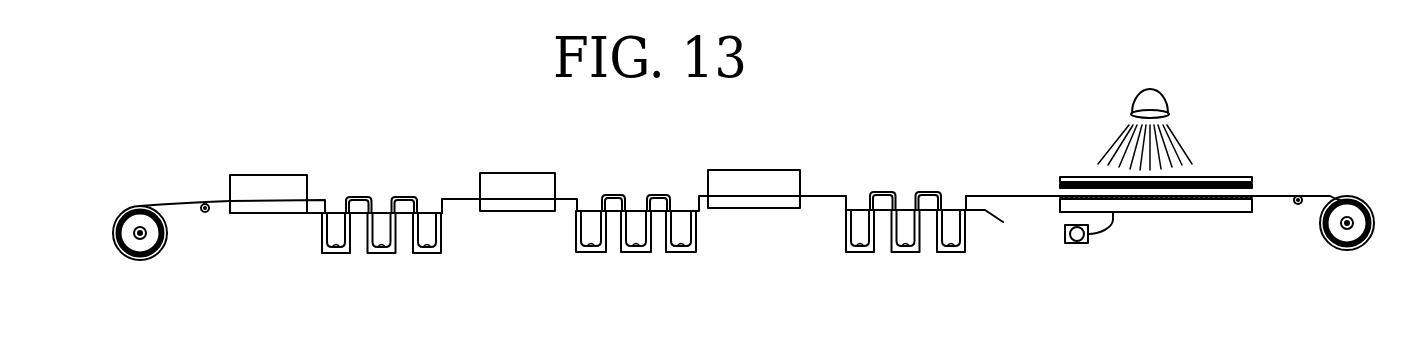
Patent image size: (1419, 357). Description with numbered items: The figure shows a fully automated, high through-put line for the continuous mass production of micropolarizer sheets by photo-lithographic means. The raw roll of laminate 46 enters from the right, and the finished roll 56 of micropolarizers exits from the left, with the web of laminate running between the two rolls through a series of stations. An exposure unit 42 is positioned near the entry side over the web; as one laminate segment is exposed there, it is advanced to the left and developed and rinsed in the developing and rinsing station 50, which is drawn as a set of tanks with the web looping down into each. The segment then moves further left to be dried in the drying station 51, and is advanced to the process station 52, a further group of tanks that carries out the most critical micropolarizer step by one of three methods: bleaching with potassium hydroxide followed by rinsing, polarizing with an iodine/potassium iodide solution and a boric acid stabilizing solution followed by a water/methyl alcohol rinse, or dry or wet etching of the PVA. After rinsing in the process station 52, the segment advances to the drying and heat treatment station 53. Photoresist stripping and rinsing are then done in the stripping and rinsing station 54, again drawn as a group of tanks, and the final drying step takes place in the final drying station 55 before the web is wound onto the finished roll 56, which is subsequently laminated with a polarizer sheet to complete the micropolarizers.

The finished roll 56 is at (128, 207).
The final drying station 55 is at (275, 223).
The photoresist stripping and rinsing station 54 is at (384, 258).
The drying and heat treatment station 53 is at (510, 218).
The μPols process station 52 is at (622, 262).
The drying station 51 is at (757, 222).
The developing and rinsing station 50 is at (898, 260).
The exposure lamp and press unit 42 is at (1207, 130).
The raw roll of laminate 46 is at (1343, 195).